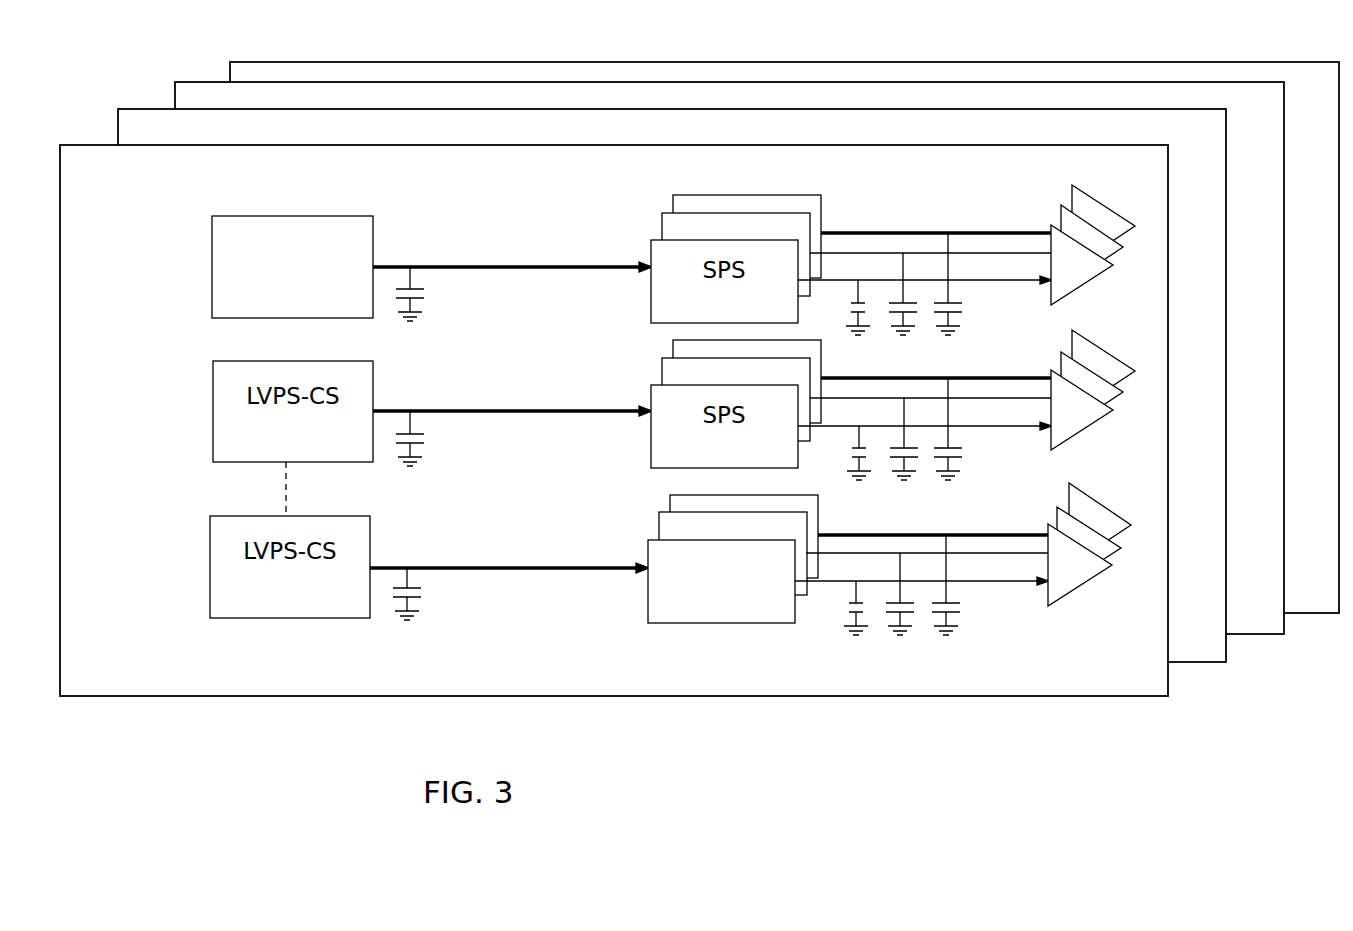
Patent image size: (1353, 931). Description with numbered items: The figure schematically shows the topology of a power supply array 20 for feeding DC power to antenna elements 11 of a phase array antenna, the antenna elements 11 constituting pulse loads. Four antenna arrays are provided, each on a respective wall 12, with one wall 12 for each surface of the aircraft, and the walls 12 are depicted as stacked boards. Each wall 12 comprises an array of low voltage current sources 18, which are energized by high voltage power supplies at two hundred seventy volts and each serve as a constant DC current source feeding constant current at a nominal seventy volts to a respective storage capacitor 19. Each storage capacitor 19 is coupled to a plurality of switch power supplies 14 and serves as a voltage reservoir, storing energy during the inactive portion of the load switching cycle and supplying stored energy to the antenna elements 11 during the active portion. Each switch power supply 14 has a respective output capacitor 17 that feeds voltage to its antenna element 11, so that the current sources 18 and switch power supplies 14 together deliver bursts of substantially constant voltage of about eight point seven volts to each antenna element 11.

The antenna elements 11 is at (1073, 502).
The wall 12 is at (1133, 616).
The switch power supplies 14 is at (787, 617).
The output capacitor 17 is at (955, 613).
The low voltage current sources 18 is at (273, 216).
The storage capacitor 19 is at (425, 298).
The power supply array 20 is at (1212, 680).